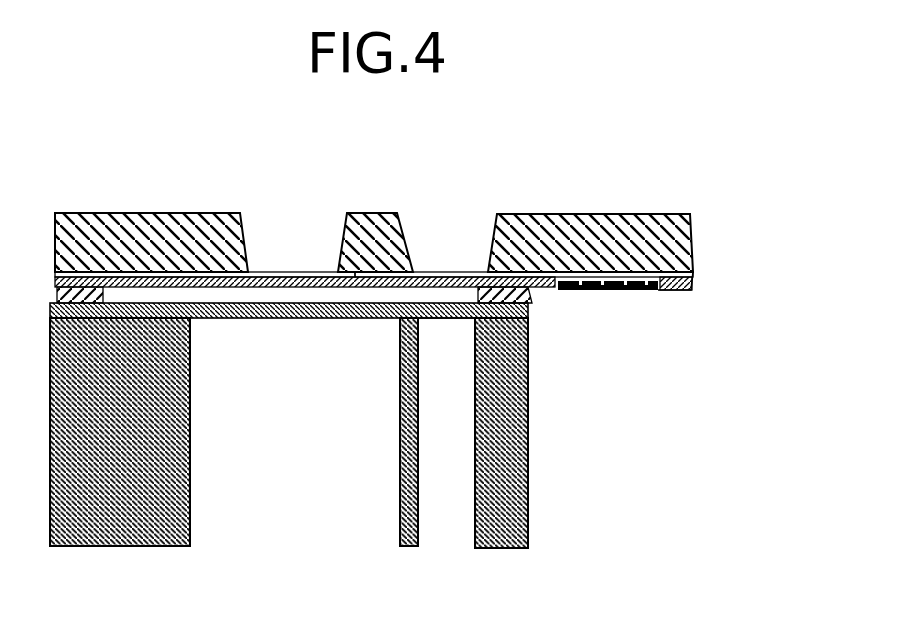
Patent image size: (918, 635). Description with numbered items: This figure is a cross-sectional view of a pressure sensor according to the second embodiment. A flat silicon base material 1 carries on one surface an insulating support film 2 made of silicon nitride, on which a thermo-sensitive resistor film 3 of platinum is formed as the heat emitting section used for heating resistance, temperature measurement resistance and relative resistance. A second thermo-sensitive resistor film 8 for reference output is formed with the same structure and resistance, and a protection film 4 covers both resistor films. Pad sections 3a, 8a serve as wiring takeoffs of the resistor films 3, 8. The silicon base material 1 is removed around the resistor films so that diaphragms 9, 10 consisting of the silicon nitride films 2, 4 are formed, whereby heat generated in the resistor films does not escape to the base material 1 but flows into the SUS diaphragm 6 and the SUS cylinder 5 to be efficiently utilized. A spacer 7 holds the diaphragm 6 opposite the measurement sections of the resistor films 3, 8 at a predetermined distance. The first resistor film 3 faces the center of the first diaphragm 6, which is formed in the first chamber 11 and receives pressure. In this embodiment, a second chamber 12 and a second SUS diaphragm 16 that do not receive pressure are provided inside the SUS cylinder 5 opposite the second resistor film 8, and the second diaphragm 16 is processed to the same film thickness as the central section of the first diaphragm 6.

The flat base material 1 is at (167, 213).
The insulating support film 2 is at (693, 273).
The thermo-sensitive resistor film 3 is at (296, 273).
The pad section 3a is at (579, 283).
The protection film 4 is at (690, 288).
The SUS cylinder 5 is at (528, 458).
The diaphragm 6 is at (290, 320).
The spacer 7 is at (528, 306).
The second thermo-sensitive resistor film 8 is at (453, 273).
The pad section 8a is at (627, 283).
The diaphragm 9 is at (260, 273).
The diaphragm 10 is at (416, 273).
The first chamber 11 is at (290, 473).
The second chamber 12 is at (457, 487).
The second SUS diaphragm 16 is at (454, 318).